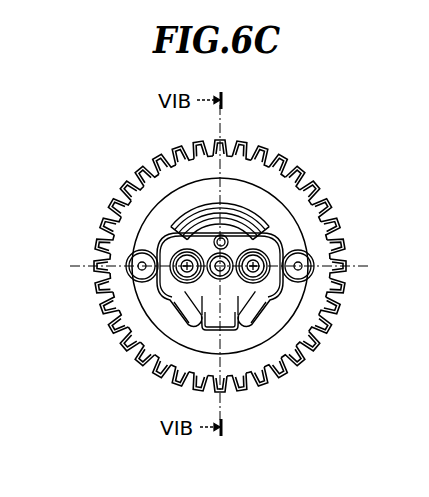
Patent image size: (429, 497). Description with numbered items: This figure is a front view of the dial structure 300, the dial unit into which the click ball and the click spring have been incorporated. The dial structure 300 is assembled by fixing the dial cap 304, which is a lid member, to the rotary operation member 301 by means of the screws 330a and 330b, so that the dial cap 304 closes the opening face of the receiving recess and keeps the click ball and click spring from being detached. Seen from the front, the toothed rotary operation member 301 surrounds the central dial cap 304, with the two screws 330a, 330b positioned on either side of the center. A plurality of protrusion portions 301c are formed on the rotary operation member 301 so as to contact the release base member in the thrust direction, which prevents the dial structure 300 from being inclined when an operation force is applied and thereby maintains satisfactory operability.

The dial structure 300 is at (160, 390).
The rotary operation member 301 is at (312, 328).
The protrusion portions 301c is at (254, 218).
The dial cap 304 is at (240, 333).
The screw 330a is at (181, 253).
The screw 330b is at (258, 262).